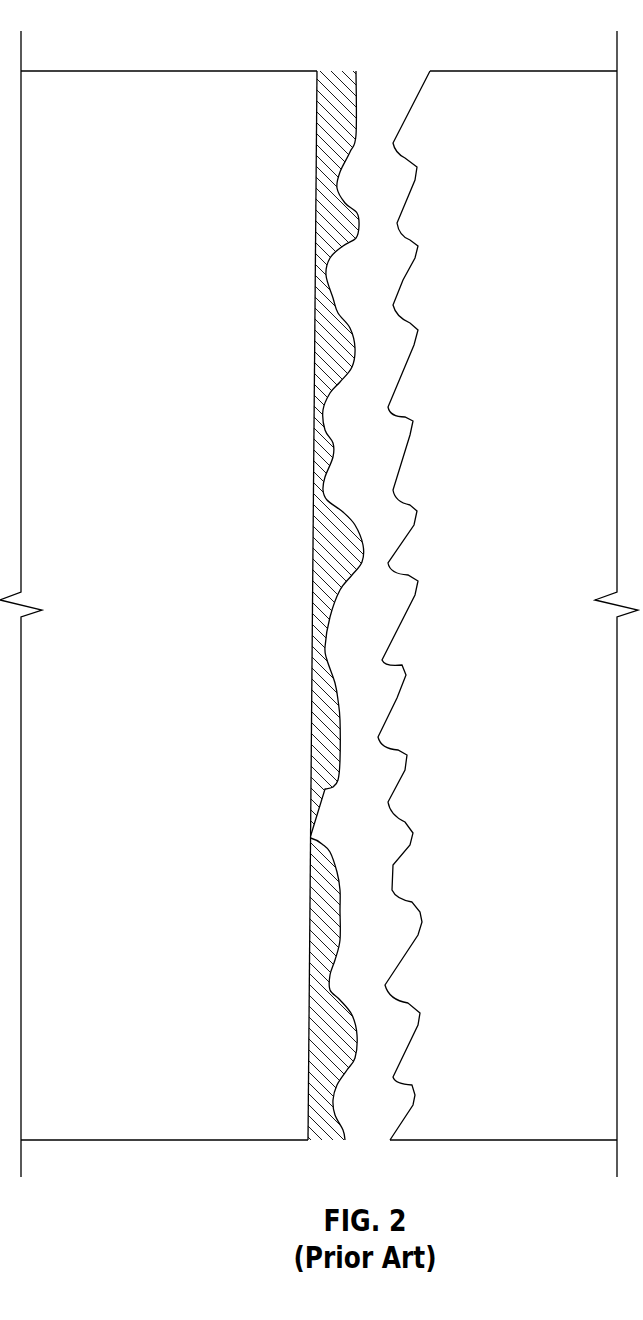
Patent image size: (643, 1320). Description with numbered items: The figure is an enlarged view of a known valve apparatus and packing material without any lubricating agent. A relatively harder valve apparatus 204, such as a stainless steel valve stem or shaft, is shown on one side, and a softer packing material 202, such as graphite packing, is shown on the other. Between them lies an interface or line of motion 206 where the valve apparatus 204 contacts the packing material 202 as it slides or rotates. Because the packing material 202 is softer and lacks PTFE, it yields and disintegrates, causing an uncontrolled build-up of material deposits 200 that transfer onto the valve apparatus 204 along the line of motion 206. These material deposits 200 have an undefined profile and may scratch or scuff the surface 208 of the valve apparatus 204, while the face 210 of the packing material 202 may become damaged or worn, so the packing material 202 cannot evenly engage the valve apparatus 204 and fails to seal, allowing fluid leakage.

The material deposits 200 is at (321, 660).
The packing material 202 is at (508, 604).
The valve apparatus 204 is at (163, 71).
The line of motion 206 is at (385, 70).
The surface of the valve apparatus 208 is at (323, 547).
The face of the packing material 210 is at (393, 492).